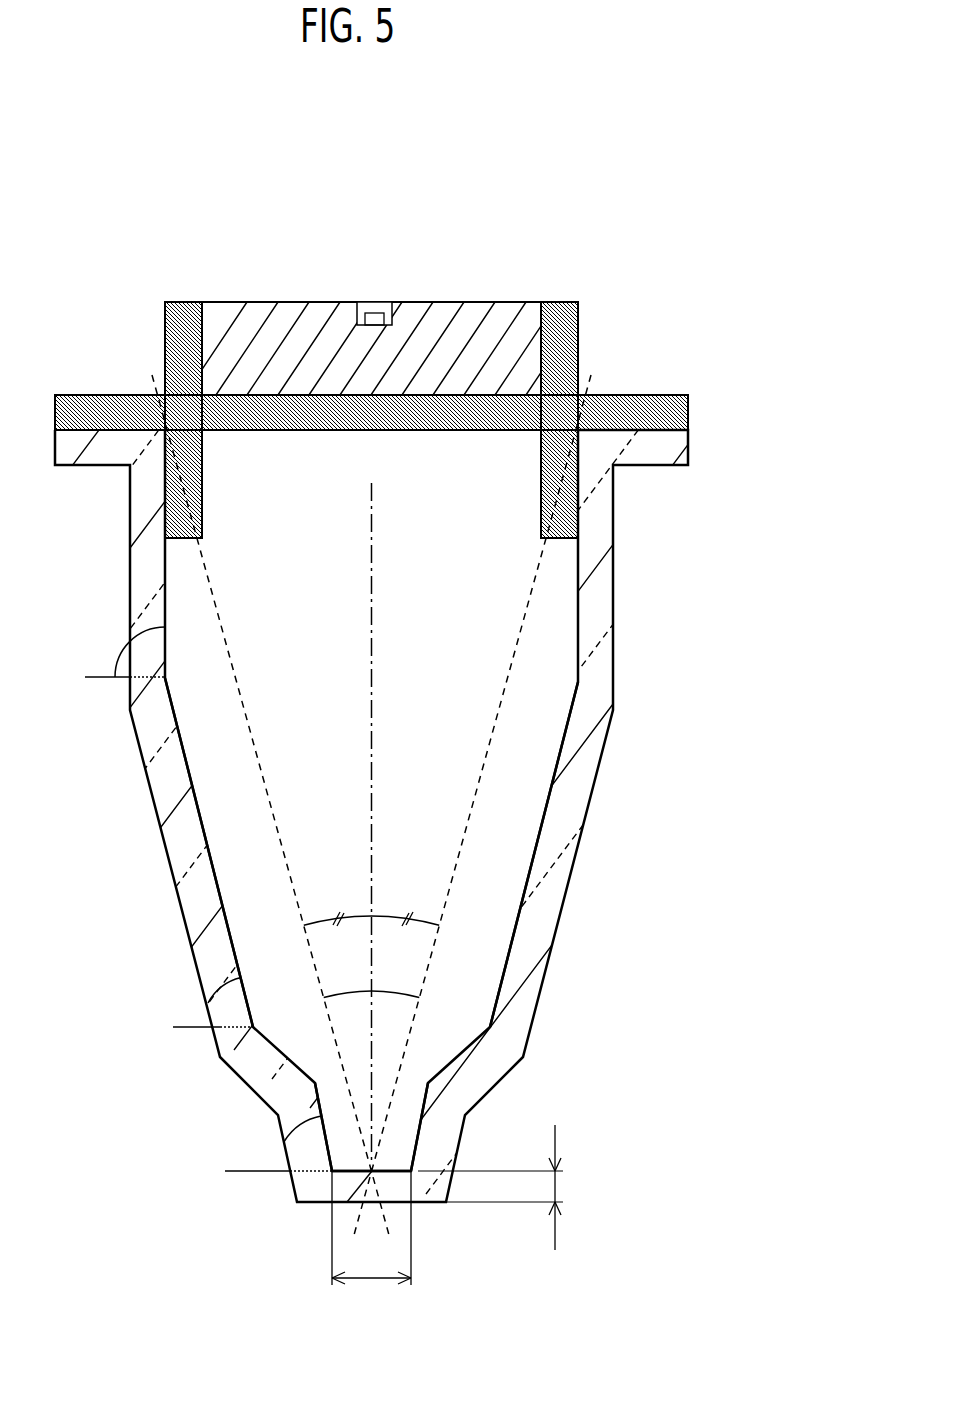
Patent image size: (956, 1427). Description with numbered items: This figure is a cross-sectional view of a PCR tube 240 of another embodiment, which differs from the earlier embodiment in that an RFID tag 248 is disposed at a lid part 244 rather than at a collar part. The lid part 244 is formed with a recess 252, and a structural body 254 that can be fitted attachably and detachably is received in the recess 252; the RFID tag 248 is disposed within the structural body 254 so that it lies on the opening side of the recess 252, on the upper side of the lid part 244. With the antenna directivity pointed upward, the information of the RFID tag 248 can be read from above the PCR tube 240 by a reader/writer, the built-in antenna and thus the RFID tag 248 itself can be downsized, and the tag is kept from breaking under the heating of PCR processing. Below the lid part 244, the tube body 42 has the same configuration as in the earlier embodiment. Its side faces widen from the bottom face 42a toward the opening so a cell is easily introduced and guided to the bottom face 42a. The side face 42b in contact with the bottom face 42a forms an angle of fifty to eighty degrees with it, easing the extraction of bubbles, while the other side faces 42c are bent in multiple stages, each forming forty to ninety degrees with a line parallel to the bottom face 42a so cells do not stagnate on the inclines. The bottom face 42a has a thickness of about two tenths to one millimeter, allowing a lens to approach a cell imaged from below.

The PCR tube 240 is at (640, 268).
The lid part 244 is at (651, 403).
The RFID tag 248 is at (372, 318).
The recess 252 is at (540, 343).
The structural body 254 is at (262, 312).
The tube body 42 is at (562, 875).
The bottom face 42a is at (388, 1168).
The side face 42b is at (423, 1100).
The side face 42c is at (578, 618).